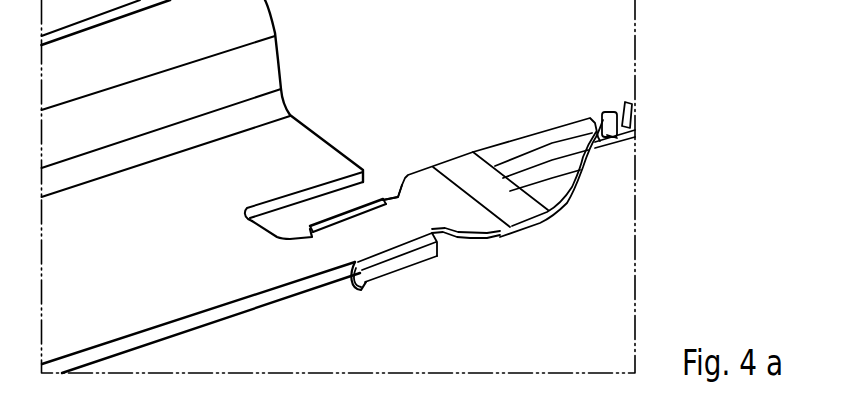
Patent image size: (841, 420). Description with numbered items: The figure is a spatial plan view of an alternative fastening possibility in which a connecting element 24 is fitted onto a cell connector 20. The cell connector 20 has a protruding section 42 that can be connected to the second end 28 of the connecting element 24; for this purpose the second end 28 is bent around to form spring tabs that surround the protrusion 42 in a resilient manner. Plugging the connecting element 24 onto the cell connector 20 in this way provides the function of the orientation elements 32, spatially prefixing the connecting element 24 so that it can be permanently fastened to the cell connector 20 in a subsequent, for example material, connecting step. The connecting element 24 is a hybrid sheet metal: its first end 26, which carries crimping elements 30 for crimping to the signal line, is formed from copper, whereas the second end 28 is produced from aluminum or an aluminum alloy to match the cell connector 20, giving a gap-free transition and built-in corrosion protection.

The cell connector 20 is at (143, 244).
The connecting element 24 is at (447, 222).
The first end 26 is at (632, 107).
The second end 28 is at (347, 239).
The crimping elements 30 is at (603, 110).
The orientation elements 32 is at (381, 188).
The protruding section 42 is at (343, 276).